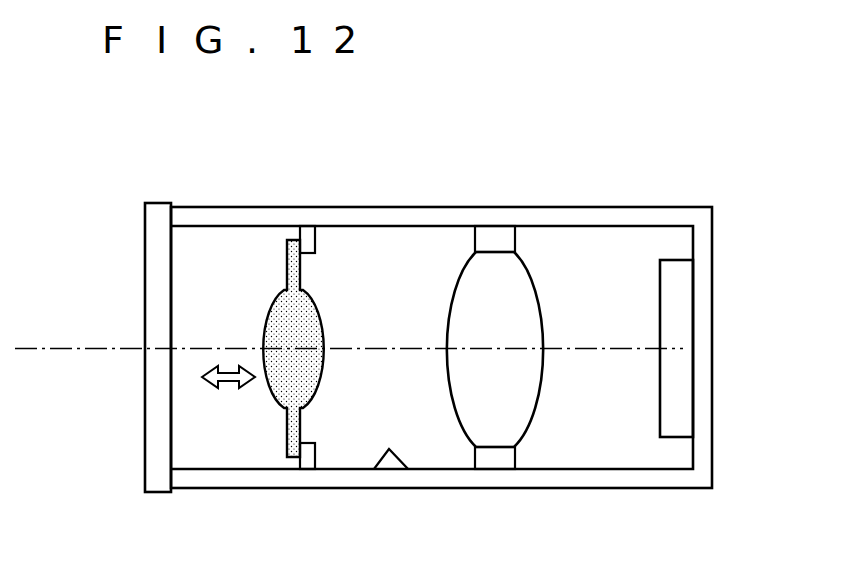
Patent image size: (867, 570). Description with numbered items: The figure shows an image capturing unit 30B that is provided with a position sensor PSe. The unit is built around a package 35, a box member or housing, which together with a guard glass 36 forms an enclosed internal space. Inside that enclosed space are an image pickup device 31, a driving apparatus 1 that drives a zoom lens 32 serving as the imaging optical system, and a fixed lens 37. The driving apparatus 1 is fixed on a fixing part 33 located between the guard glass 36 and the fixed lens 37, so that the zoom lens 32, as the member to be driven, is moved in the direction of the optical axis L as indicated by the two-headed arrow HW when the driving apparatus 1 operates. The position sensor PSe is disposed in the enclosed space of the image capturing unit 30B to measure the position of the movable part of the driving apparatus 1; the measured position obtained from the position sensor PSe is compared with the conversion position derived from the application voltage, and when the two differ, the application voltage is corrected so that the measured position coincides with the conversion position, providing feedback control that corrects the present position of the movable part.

The image capturing unit 30B is at (210, 151).
The driving apparatus 1 is at (328, 348).
The image pickup device 31 is at (683, 397).
The zoom lens 32 is at (300, 315).
The fixing part 33 is at (316, 247).
The package 35 is at (535, 480).
The guard glass 36 is at (157, 463).
The fixed lens 37 is at (518, 293).
The two-headed arrow HW is at (227, 385).
The optical axis L is at (75, 352).
The position sensor PSe is at (397, 470).